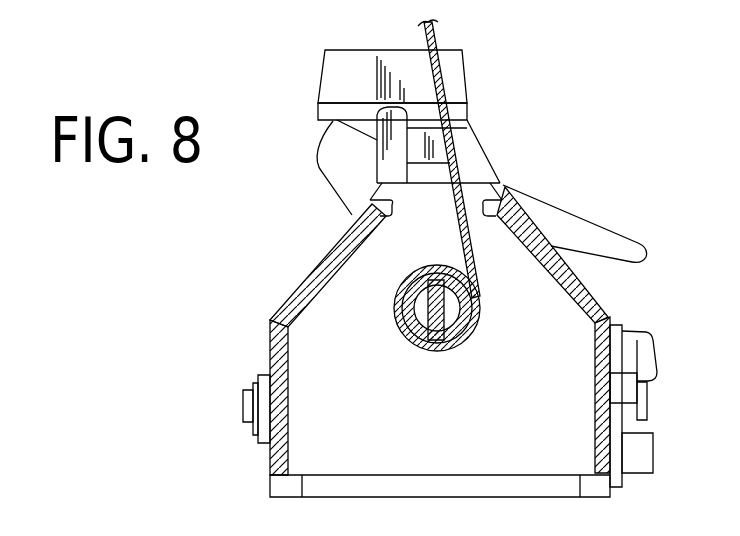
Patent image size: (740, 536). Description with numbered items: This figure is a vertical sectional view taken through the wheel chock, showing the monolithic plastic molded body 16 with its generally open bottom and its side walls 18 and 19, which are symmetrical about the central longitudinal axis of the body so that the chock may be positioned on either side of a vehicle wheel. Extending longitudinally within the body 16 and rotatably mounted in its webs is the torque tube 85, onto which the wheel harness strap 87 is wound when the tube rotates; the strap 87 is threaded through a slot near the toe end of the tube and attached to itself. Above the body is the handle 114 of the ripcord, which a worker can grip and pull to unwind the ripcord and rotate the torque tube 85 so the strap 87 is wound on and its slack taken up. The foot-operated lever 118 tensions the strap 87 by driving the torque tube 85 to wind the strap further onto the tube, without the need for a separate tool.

The handle 114 is at (362, 58).
The wheel harness strap 87 is at (440, 35).
The foot-operated lever 118 is at (566, 203).
The body 16 is at (312, 270).
The torque tube 85 is at (397, 290).
The side wall 18 is at (598, 428).
The side wall 19 is at (277, 457).